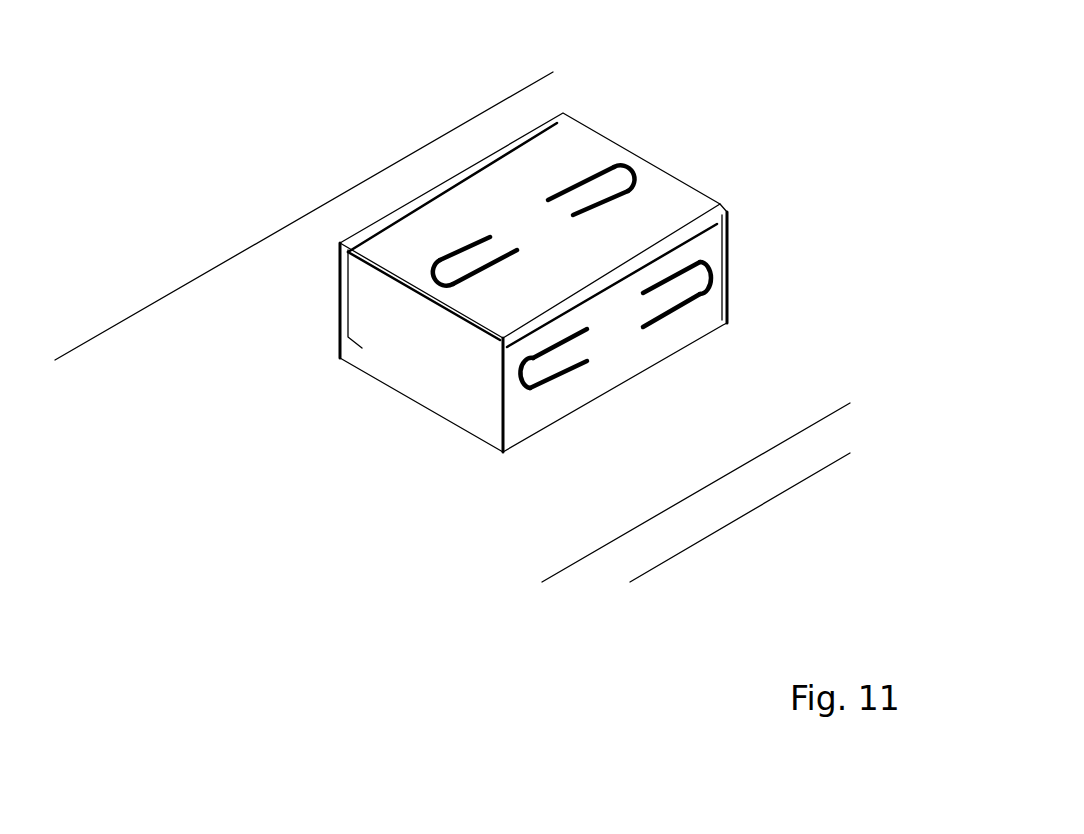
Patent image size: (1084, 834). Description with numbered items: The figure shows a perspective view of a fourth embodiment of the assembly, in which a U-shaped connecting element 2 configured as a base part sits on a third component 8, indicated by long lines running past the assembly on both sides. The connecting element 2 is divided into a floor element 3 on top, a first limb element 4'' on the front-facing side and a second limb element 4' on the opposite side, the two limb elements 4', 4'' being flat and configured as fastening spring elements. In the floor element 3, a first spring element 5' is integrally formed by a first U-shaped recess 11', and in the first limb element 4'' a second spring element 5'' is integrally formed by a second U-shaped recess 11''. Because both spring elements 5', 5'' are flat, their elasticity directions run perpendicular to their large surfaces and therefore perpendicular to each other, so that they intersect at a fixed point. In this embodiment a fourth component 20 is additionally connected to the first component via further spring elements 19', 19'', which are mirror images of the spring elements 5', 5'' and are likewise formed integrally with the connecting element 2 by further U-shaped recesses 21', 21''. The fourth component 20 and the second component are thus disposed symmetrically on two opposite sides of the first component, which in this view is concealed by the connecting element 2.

The connecting element 2 is at (454, 272).
The floor element 3 is at (543, 152).
The second limb element 4' is at (280, 328).
The first limb element 4'' is at (677, 375).
The first spring element 5' is at (656, 136).
The second spring element 5'' is at (772, 330).
The third component 8 is at (393, 188).
The first U-shaped recess 11' is at (593, 110).
The second U-shaped recess 11'' is at (720, 341).
The first further spring element 19' is at (453, 172).
The second further spring element 19'' is at (664, 458).
The fourth component 20 is at (377, 308).
The first further U-shaped recess 21' is at (321, 180).
The second further U-shaped recess 21'' is at (572, 437).